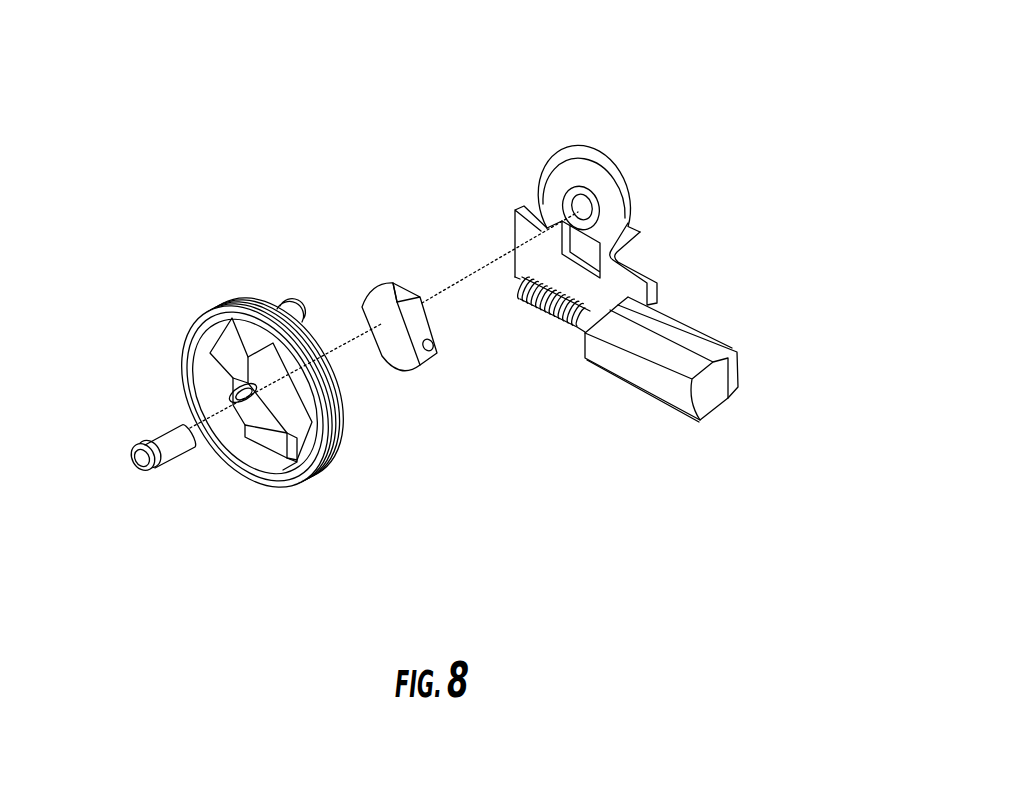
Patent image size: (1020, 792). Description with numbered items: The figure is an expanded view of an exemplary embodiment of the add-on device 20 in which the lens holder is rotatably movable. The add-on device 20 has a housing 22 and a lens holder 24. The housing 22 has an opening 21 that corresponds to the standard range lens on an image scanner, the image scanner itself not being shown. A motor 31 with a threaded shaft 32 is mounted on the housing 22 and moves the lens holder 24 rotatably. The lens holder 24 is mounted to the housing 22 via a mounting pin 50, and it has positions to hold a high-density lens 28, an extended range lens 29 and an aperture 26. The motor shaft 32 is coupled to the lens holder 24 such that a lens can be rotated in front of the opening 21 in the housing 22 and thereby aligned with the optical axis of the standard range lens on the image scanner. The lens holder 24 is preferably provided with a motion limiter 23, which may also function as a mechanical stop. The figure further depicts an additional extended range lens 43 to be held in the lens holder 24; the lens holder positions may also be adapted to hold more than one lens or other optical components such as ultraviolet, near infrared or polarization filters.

The add-on device 20 is at (764, 175).
The opening 21 is at (568, 251).
The housing 22 is at (580, 155).
The motion limiter 23 is at (283, 294).
The lens holder 24 is at (277, 489).
The aperture 26 is at (264, 446).
The high-density lens 28 is at (221, 336).
The extended range lens 29 is at (273, 368).
The motor 31 is at (735, 390).
The threaded shaft 32 is at (585, 322).
The additional extended range lens 43 is at (435, 354).
The mounting pin 50 is at (164, 454).